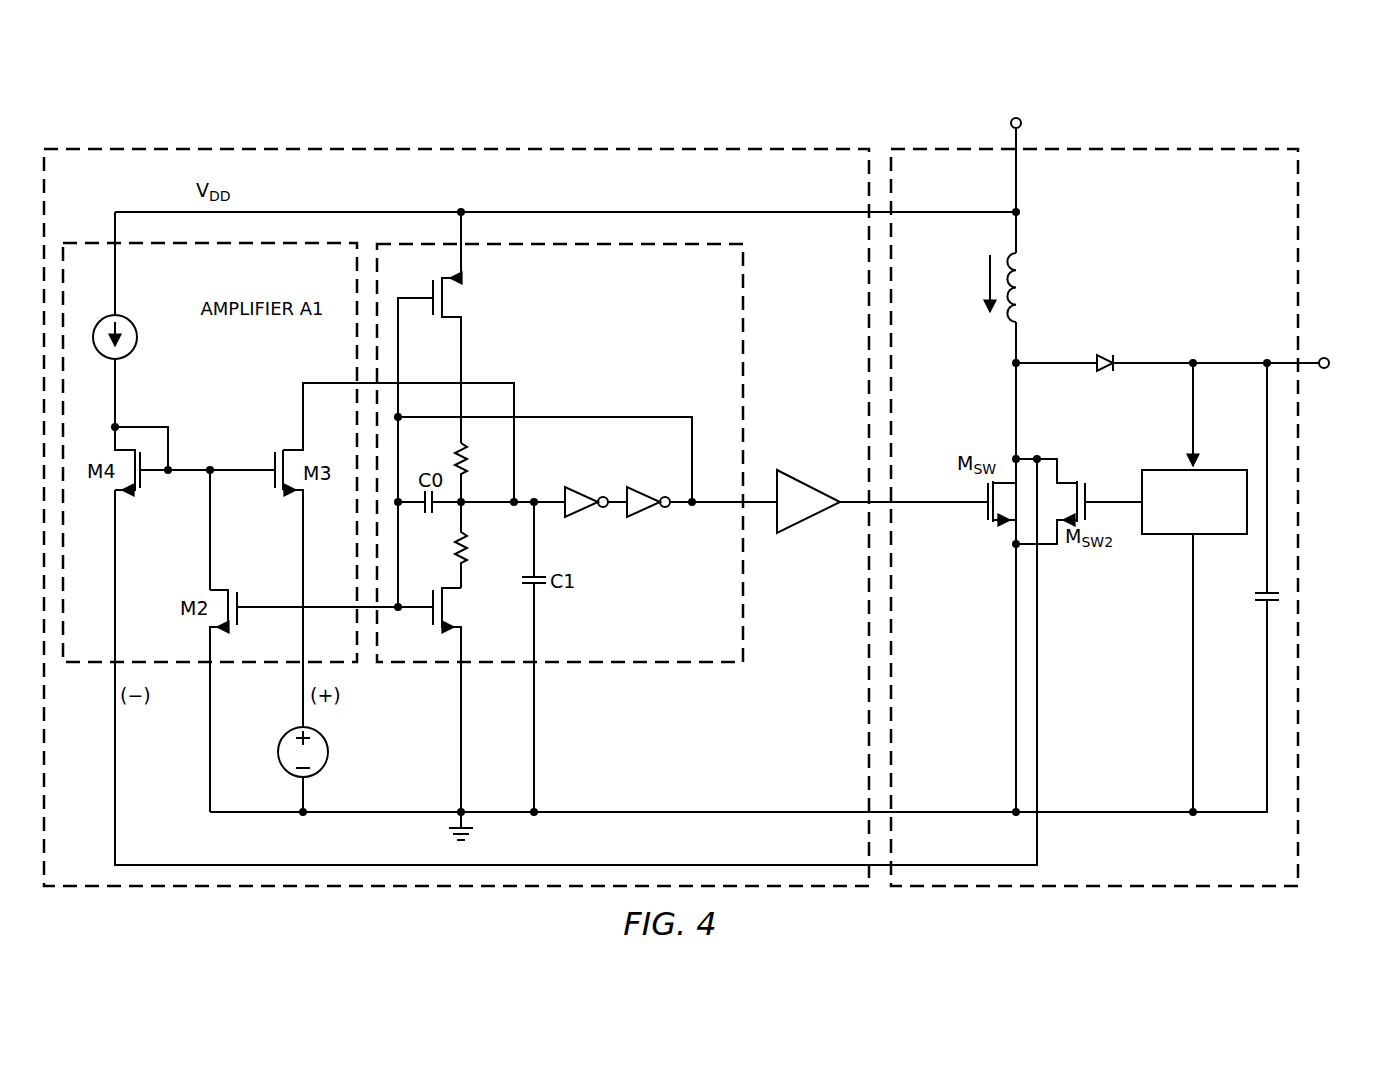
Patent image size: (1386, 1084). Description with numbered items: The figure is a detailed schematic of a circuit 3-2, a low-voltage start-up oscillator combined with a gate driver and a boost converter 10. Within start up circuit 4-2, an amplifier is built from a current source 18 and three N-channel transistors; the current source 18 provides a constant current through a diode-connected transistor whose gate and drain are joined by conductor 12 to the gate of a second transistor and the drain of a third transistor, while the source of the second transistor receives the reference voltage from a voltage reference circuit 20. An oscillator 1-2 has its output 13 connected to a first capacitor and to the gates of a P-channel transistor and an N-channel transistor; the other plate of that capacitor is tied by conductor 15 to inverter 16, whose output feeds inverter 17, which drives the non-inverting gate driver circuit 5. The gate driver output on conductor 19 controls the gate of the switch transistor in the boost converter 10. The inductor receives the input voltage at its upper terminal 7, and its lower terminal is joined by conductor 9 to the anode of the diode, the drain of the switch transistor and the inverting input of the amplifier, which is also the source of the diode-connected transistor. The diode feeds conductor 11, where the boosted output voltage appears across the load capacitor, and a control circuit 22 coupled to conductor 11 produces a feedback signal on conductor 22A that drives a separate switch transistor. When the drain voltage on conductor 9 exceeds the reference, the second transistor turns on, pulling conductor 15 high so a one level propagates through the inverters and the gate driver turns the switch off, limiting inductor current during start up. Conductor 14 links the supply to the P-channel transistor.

The circuit 3-2 is at (237, 120).
The start up circuit 4-2 is at (452, 147).
The boost converter 10 is at (1195, 147).
The oscillator 1-2 is at (746, 331).
The current source 18 is at (108, 318).
The conductor 12 is at (188, 465).
The conductor 15 is at (303, 415).
The output conductor 13 is at (273, 603).
The conductor 14 is at (461, 352).
The conductor 9 is at (115, 565).
The inverter 16 is at (585, 513).
The inverter 17 is at (648, 513).
The gate driver circuit 5 is at (808, 520).
The conductor 19 is at (930, 507).
The input node / inductor L 7 is at (1016, 235).
The conductor 11 is at (1237, 362).
The conductor 22A is at (1120, 500).
The control circuit 22 is at (1222, 470).
The voltage reference circuit 20 is at (278, 752).